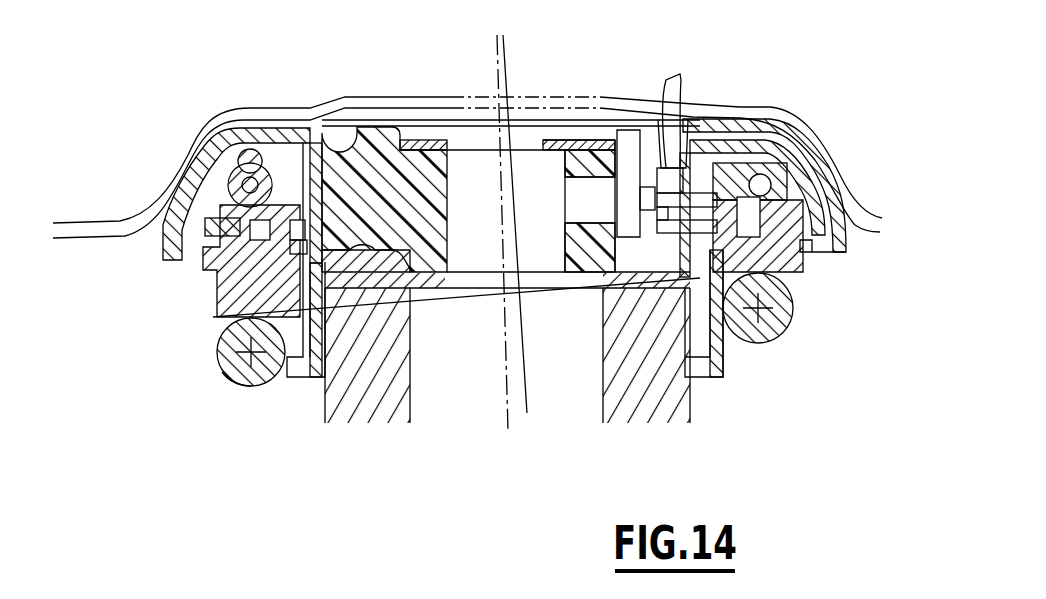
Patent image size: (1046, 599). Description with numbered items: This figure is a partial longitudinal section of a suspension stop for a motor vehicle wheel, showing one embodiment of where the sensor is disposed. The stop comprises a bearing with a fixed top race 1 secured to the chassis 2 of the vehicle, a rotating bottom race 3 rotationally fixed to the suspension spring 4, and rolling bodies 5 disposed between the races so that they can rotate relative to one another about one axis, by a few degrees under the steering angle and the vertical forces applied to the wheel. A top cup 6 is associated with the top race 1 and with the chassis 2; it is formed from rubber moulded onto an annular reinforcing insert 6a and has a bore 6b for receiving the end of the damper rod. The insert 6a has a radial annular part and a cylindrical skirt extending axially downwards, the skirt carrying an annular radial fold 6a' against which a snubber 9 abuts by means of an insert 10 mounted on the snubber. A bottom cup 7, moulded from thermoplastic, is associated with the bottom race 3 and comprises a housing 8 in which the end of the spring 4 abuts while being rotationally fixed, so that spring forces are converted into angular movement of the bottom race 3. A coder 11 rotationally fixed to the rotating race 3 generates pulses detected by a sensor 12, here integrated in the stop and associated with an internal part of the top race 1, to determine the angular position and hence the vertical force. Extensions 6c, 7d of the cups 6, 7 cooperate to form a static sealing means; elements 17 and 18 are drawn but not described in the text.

The fixed top race 1 is at (262, 167).
The chassis 2 is at (550, 100).
The rotating bottom race 3 is at (300, 233).
The suspension spring 4 is at (237, 367).
The rolling bodies 5 is at (210, 135).
The top cup 6 is at (385, 140).
The annular reinforcing insert 6a is at (312, 139).
The annular radial fold 6a' is at (397, 322).
The bore 6b is at (557, 363).
The extension of the top cup 6c is at (813, 263).
The bottom cup 7 is at (218, 313).
The extension of the bottom cup 7d is at (800, 273).
The housing 8 is at (268, 335).
The snubber 9 is at (355, 380).
The insert 10 is at (327, 388).
The coder 11 is at (305, 247).
The sensor 12 is at (650, 128).
The spacer 17 is at (305, 250).
The bracket 18 is at (647, 188).